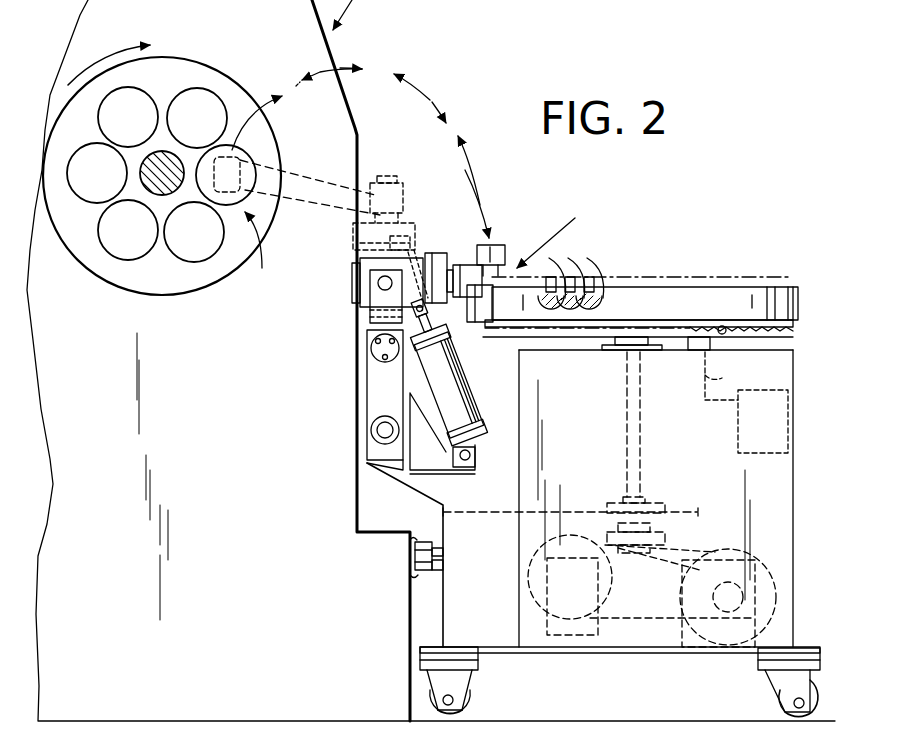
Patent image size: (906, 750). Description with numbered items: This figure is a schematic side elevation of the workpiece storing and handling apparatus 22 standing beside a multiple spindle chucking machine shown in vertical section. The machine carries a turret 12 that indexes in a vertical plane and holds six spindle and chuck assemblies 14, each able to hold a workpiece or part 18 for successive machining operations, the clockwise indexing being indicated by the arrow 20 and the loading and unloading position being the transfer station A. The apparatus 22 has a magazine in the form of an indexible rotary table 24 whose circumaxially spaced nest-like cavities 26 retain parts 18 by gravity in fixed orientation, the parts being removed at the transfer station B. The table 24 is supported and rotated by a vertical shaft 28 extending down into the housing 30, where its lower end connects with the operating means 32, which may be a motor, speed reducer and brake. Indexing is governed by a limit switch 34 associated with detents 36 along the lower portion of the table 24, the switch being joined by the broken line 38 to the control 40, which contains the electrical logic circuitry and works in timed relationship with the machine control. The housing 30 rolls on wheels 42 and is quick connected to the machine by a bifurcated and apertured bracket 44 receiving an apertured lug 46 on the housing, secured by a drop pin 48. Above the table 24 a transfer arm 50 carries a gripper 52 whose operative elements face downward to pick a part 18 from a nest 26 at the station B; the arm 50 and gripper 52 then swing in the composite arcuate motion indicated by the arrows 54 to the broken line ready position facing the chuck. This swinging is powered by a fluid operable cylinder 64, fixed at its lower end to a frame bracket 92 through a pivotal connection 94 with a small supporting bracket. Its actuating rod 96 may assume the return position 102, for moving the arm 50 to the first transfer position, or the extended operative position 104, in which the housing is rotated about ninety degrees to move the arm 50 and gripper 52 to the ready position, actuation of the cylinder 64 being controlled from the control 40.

The turret 12 is at (212, 62).
The spindle and chuck assembly 14 is at (141, 241).
The arrow 20 is at (106, 60).
The transfer station A is at (256, 251).
The transfer station B is at (554, 229).
The arrows 54 is at (350, 67).
The extended or operative position 104 is at (353, 247).
The actuating rod 96 is at (412, 250).
The return position 102 is at (360, 320).
The transfer arm 50 is at (458, 264).
The gripper 52 is at (495, 245).
The workpiece storing and handling apparatus 22 is at (577, 243).
The workpiece or part 18 is at (592, 270).
The nest-like cavities 26 is at (598, 305).
The magazine table 24 is at (797, 300).
The detents 36 is at (780, 336).
The limit switch 34 is at (700, 348).
The broken line 38 is at (725, 376).
The control 40 is at (765, 413).
The housing 30 is at (793, 483).
The vertical shaft 28 is at (641, 438).
The operating means 32 is at (680, 540).
The fluid operable cylinder 64 is at (447, 377).
The pivotal connection 94 is at (477, 448).
The frame bracket 92 is at (477, 463).
The apertured lug 46 is at (445, 565).
The drop pin 48 is at (408, 540).
The bifurcated and apertured bracket 44 is at (410, 577).
The wheels 42 is at (470, 710).